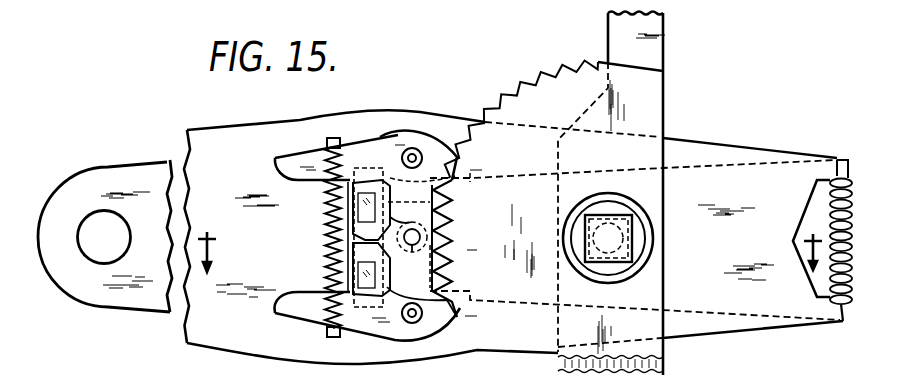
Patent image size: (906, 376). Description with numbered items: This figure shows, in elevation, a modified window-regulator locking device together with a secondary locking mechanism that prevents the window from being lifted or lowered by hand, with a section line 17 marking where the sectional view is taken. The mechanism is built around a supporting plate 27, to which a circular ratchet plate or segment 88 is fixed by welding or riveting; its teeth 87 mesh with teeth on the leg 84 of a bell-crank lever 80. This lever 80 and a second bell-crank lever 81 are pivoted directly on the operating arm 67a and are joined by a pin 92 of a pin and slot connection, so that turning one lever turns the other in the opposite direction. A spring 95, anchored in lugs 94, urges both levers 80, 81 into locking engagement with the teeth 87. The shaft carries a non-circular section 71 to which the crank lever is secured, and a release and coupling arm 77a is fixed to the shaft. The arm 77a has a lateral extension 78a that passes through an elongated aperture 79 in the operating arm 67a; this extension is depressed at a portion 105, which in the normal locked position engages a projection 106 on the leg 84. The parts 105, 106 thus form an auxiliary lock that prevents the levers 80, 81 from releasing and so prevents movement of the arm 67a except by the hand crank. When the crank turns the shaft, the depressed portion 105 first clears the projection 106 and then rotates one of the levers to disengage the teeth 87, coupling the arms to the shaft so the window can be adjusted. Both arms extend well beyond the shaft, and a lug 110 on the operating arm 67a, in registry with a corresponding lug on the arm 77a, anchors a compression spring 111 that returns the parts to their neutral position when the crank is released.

The section line 17 is at (510, 242).
The supporting plate 27 is at (665, 41).
The operating arm 67a is at (722, 335).
The non-circular section of shaft 71 is at (652, 238).
The release and coupling arm 77a is at (753, 163).
The lateral extension 78a is at (328, 292).
The elongated aperture 79 is at (366, 166).
The bell-crank lever 80 is at (292, 158).
The bell-crank lever 81 is at (326, 329).
The leg of bell-crank lever 84 is at (442, 202).
The teeth of ratchet segment 87 is at (516, 92).
The circular ratchet plate or segment 88 is at (588, 85).
The pin of pin and slot connection 92 is at (412, 248).
The lugs 94 is at (337, 137).
The spring 95 is at (323, 204).
The depressed portion 105 is at (352, 230).
The projection 106 is at (352, 250).
The lug 110 is at (843, 324).
The compression spring 111 is at (839, 160).